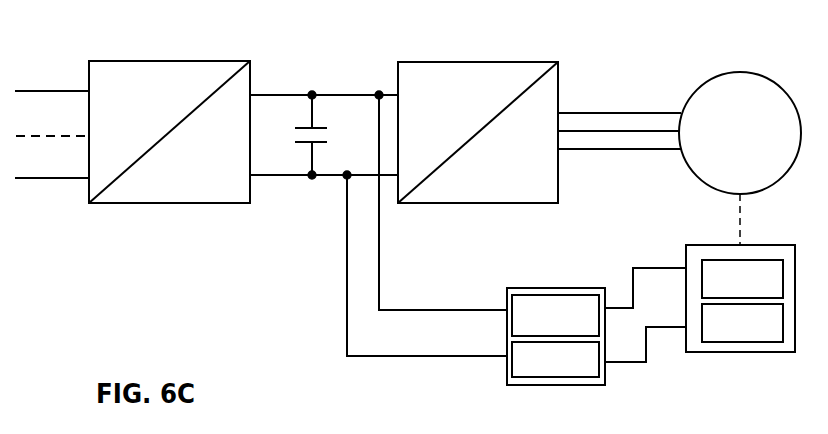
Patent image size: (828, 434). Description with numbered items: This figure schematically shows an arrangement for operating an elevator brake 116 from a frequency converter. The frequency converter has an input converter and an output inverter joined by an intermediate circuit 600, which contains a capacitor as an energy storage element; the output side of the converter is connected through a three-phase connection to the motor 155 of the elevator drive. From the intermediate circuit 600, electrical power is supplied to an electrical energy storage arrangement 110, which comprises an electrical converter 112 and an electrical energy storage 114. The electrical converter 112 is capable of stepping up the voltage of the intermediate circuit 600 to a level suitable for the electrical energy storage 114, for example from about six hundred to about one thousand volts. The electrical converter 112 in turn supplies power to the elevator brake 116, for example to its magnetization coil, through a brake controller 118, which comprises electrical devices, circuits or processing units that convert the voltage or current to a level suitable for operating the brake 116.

The intermediate circuit 600 is at (339, 72).
The electrical energy storage arrangement 110 is at (512, 288).
The electrical converter 112 is at (535, 328).
The electrical energy storage 114 is at (535, 370).
The elevator brake 116 is at (721, 290).
The brake controller 118 is at (721, 332).
The motor 155 is at (719, 146).